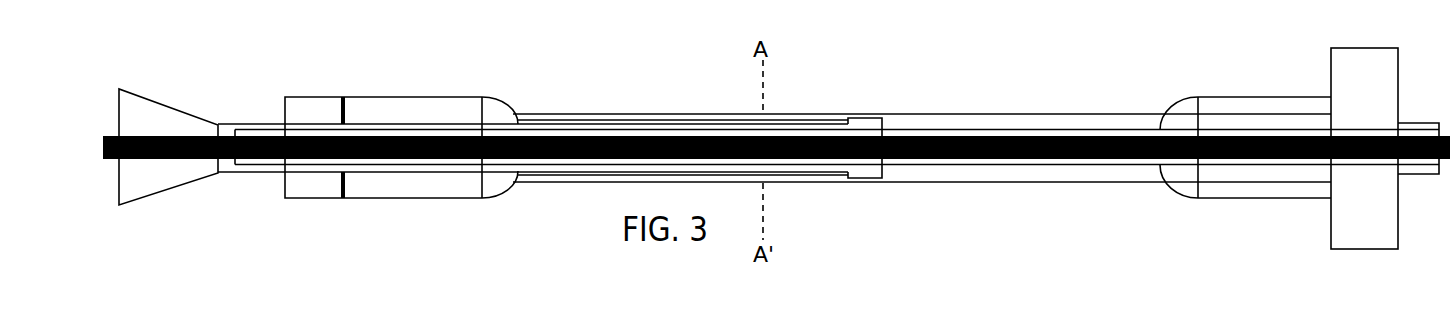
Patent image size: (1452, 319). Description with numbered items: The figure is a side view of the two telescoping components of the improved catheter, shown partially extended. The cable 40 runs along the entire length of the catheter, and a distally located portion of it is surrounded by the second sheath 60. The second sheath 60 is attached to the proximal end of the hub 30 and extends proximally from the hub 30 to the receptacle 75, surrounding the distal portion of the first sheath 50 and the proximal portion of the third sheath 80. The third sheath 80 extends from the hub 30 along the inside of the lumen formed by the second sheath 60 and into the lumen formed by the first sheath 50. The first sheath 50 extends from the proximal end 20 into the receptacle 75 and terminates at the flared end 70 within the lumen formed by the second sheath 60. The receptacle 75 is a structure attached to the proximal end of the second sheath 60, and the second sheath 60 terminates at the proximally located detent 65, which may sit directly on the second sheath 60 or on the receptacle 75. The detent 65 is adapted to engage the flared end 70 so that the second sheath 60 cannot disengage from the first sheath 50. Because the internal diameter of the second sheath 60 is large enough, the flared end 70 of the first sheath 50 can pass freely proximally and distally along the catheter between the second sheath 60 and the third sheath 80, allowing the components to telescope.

The proximal end 20 is at (160, 193).
The hub 30 is at (1222, 100).
The cable 40 is at (103, 158).
The first sheath 50 is at (233, 124).
The second sheath 60 is at (957, 108).
The detent 65 is at (342, 108).
The flared end 70 is at (863, 173).
The receptacle 75 is at (377, 97).
The third sheath 80 is at (908, 166).